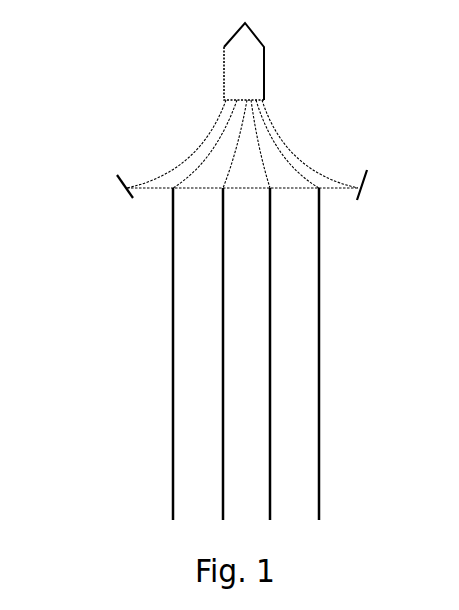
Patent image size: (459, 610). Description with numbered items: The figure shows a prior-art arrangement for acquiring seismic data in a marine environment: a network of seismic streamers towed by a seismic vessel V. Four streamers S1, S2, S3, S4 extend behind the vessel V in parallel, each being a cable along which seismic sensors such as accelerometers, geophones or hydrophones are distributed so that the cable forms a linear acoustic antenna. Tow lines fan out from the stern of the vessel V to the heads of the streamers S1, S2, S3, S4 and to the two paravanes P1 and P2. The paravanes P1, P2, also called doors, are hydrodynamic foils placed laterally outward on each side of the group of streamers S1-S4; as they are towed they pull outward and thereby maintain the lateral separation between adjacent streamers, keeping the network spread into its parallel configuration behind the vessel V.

The seismic vessel V is at (264, 60).
The paravane P1 is at (128, 188).
The paravane P2 is at (360, 188).
The streamer S1 is at (173, 470).
The streamer S2 is at (223, 505).
The streamer S3 is at (270, 505).
The streamer S4 is at (319, 470).